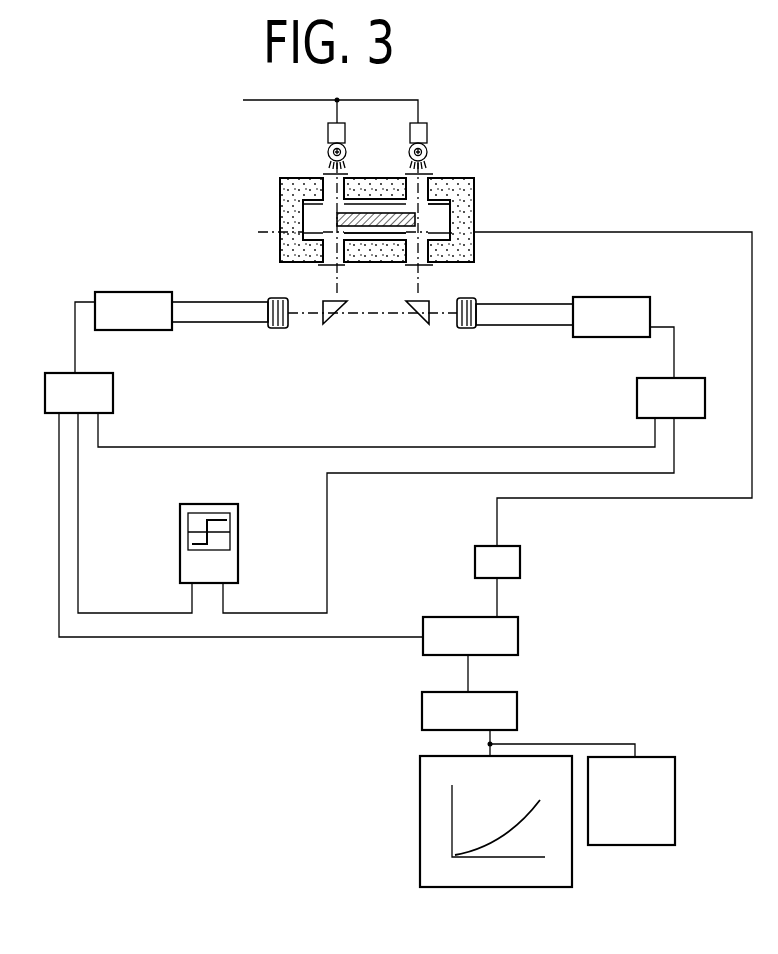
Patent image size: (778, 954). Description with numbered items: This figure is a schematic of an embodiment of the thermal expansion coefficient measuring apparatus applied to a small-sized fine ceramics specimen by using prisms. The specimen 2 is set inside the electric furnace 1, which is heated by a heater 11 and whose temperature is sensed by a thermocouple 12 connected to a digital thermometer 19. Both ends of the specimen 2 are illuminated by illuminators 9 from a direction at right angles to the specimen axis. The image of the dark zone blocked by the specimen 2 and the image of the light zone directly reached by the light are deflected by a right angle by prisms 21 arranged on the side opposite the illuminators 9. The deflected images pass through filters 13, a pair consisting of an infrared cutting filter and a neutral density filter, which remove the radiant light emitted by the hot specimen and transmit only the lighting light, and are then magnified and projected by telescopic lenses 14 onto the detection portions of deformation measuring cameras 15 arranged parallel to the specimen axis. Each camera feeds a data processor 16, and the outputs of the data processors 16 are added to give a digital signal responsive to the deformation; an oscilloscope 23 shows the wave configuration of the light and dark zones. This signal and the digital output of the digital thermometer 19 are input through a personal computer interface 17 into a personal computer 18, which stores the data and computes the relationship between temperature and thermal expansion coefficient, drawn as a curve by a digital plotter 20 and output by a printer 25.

The electric furnace 1 is at (286, 196).
The specimen 2 is at (372, 212).
The illuminator 9 is at (345, 142).
The heater 11 is at (455, 172).
The thermocouple 12 is at (372, 240).
The filter 13 is at (283, 330).
The telescopic lens 14 is at (225, 323).
The deformation measuring camera 15 is at (123, 310).
The data processor 16 is at (64, 388).
The personal computer interface 17 is at (505, 635).
The personal computer 18 is at (507, 705).
The digital thermometer 19 is at (510, 560).
The digital plotter 20 is at (440, 756).
The prism 21 is at (341, 317).
The oscilloscope 23 is at (209, 503).
The printer 25 is at (665, 785).